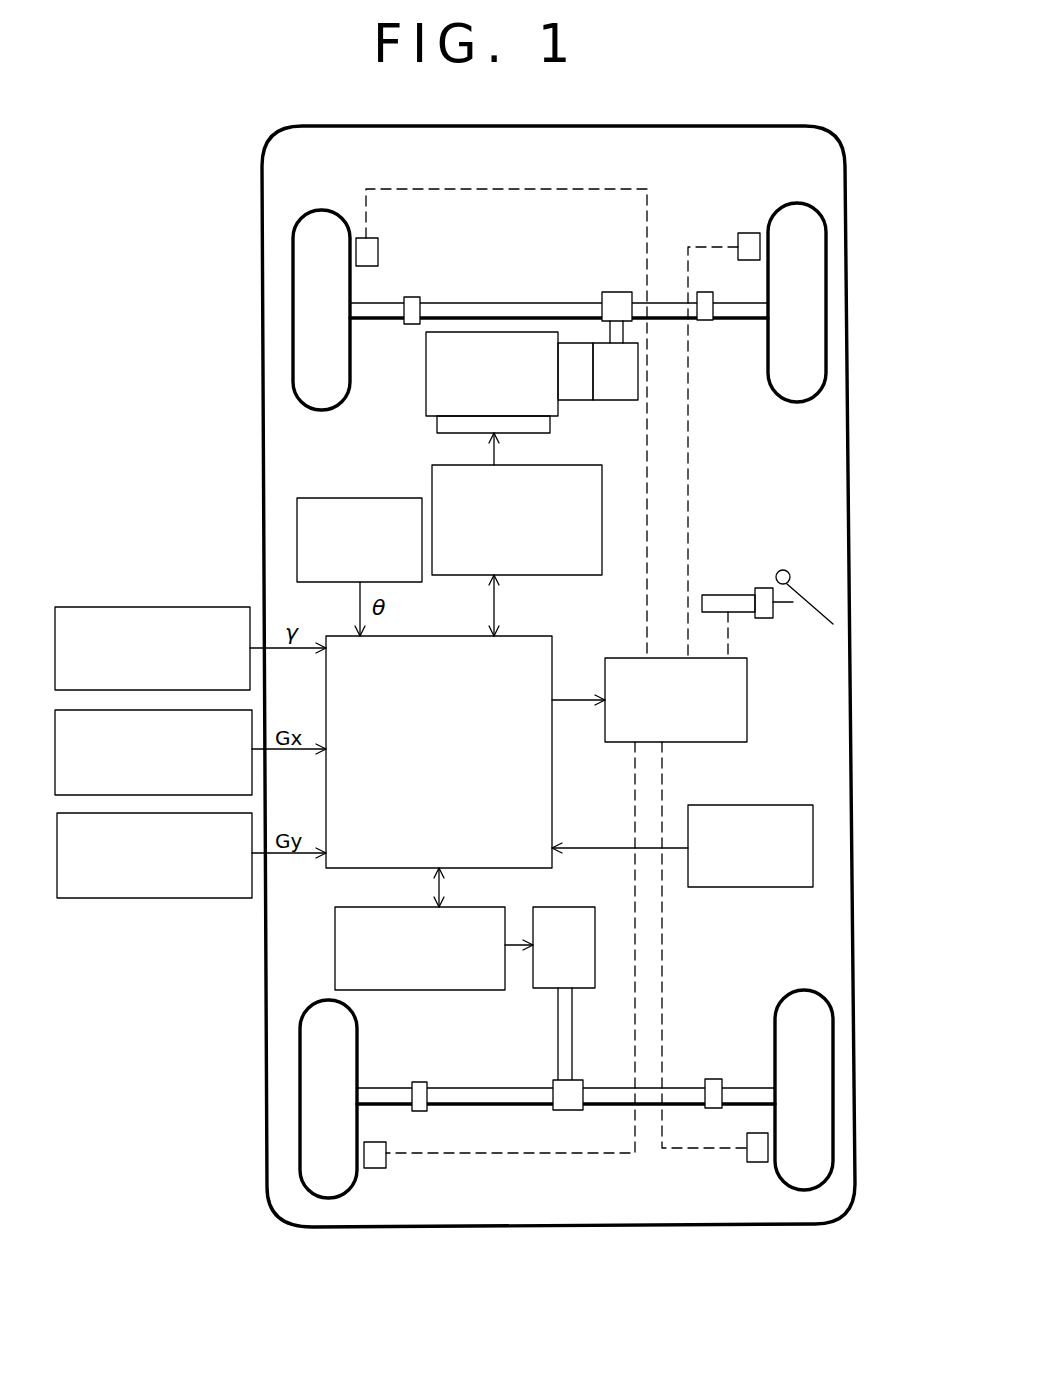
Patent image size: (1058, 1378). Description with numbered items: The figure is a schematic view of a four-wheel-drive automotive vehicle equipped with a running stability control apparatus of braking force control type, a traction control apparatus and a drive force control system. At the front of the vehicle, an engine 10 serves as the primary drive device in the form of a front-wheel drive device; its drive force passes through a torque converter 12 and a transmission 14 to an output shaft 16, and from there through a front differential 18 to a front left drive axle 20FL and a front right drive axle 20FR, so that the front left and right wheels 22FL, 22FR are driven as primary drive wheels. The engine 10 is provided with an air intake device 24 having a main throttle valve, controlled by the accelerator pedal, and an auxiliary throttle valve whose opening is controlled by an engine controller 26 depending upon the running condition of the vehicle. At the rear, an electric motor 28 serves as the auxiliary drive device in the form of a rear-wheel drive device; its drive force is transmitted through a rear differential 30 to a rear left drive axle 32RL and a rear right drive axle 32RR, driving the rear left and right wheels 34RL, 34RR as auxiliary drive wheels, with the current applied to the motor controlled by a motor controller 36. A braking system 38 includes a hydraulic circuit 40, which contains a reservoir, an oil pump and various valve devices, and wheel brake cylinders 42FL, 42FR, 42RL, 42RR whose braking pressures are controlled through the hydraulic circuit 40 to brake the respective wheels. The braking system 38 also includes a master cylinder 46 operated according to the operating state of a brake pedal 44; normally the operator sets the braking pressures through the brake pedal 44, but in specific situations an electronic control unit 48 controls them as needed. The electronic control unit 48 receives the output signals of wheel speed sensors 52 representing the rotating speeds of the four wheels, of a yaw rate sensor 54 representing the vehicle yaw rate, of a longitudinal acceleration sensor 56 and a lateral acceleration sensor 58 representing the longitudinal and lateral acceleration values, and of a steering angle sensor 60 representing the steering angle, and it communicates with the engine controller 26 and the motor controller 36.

The engine 10 is at (492, 374).
The torque converter 12 is at (578, 392).
The transmission 14 is at (628, 372).
The output shaft 16 is at (612, 332).
The front differential 18 is at (617, 298).
The front left drive axle 20FL is at (463, 310).
The front right drive axle 20FR is at (665, 305).
The front left wheel 22FL is at (294, 310).
The front right wheel 22FR is at (798, 403).
The air intake device 24 is at (447, 423).
The engine controller 26 is at (517, 520).
The electric motor 28 is at (564, 994).
The rear differential 30 is at (566, 1110).
The rear left drive axle 32RL is at (474, 1095).
The rear right drive axle 32RR is at (680, 1090).
The rear left wheel 34RL is at (300, 1100).
The rear right wheel 34RR is at (800, 1190).
The motor controller 36 is at (420, 948).
The braking system 38 is at (758, 726).
The hydraulic circuit 40 is at (676, 700).
The front left wheel brake cylinder 42FL is at (365, 253).
The front right wheel brake cylinder 42FR is at (752, 240).
The rear left wheel brake cylinder 42RL is at (380, 1168).
The rear right wheel brake cylinder 42RR is at (757, 1158).
The brake pedal 44 is at (846, 632).
The master cylinder 46 is at (728, 595).
The electronic control unit 48 is at (439, 752).
The wheel speed sensors 52 is at (761, 883).
The yaw rate sensor 54 is at (158, 607).
The longitudinal acceleration sensor 56 is at (252, 768).
The lateral acceleration sensor 58 is at (140, 898).
The steering angle sensor 60 is at (320, 500).